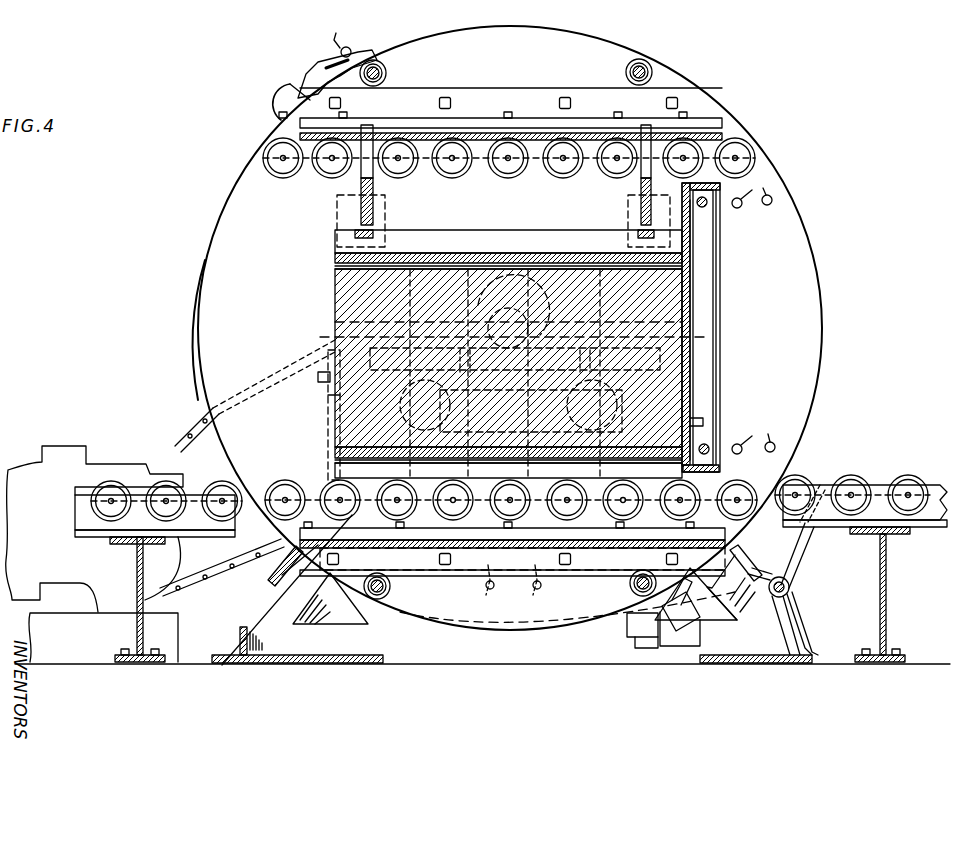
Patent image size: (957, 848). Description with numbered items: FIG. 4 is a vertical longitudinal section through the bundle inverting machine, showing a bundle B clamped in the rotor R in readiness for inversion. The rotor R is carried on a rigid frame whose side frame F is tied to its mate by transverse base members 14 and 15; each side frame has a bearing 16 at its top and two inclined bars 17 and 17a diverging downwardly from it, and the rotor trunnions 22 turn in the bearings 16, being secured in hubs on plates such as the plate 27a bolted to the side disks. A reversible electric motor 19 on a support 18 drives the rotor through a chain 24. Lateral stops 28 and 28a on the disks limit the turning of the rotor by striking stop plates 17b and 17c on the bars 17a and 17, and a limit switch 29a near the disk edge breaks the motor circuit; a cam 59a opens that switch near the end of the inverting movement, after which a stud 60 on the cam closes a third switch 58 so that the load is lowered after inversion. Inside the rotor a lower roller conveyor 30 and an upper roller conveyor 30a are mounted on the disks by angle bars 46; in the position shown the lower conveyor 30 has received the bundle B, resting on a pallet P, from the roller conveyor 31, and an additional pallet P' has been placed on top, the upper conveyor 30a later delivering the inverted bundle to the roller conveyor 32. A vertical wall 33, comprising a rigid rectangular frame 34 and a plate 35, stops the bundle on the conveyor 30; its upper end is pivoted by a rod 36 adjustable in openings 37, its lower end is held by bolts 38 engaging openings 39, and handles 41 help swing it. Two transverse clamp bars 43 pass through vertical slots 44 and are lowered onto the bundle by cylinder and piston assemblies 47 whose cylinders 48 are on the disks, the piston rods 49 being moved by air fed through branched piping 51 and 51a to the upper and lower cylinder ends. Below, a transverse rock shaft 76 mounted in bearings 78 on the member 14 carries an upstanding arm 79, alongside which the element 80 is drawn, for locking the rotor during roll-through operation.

The drum rim 27a is at (518, 16).
The rotor R is at (198, 258).
The transverse base member 15 is at (347, 663).
The transverse base member 14 is at (241, 660).
The angle bars 46 is at (470, 125).
The upper roller conveyor 30a is at (540, 176).
The lower roller conveyor 30 is at (322, 486).
The vertical slots 44 is at (368, 130).
The transverse clamp bars 43 is at (376, 215).
The additional pallet P' is at (484, 247).
The pallet P is at (484, 451).
The bundle B is at (338, 297).
The bearing 16 is at (480, 318).
The trunnions 22 is at (570, 326).
The branched piping 51 is at (545, 405).
The branched piping 51a is at (560, 575).
The piston rods 49 is at (360, 320).
The cylinder and piston assemblies 47 is at (326, 362).
The cylinders 48 is at (330, 392).
The vertical wall 33 is at (712, 262).
The rigid rectangular frame 34 is at (702, 290).
The plate 35 is at (686, 310).
The rod 36 is at (706, 206).
The openings 37 is at (752, 191).
The handles 41 is at (703, 422).
The bolts 38 is at (710, 442).
The openings 39 is at (753, 438).
The cam 59a is at (325, 58).
The stud 60 is at (346, 47).
The lateral stop 28 is at (286, 90).
The roller conveyor 31 is at (118, 478).
The reversible electric motor 19 is at (66, 460).
The support 18 is at (103, 599).
The lateral stop 28a is at (283, 543).
The chain 24 is at (188, 430).
The inclined bar 17 is at (265, 608).
The stop plate 17c is at (270, 580).
The side frame F is at (238, 620).
The roller conveyor 32 is at (888, 480).
The link 80 is at (820, 487).
The upstanding arm 79 is at (810, 542).
The inclined bar 17a is at (788, 582).
The stop plate 17b is at (745, 568).
The rock shaft 76 is at (790, 590).
The bearings 78 is at (790, 598).
The third switch 58 is at (624, 628).
The limit switch 29a is at (700, 624).